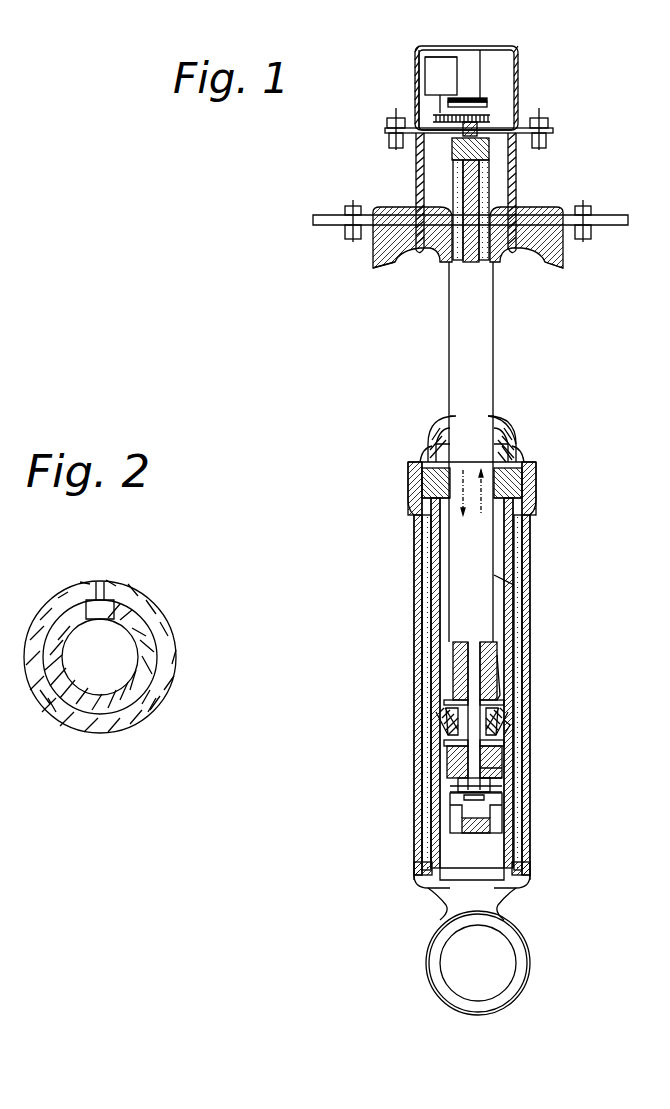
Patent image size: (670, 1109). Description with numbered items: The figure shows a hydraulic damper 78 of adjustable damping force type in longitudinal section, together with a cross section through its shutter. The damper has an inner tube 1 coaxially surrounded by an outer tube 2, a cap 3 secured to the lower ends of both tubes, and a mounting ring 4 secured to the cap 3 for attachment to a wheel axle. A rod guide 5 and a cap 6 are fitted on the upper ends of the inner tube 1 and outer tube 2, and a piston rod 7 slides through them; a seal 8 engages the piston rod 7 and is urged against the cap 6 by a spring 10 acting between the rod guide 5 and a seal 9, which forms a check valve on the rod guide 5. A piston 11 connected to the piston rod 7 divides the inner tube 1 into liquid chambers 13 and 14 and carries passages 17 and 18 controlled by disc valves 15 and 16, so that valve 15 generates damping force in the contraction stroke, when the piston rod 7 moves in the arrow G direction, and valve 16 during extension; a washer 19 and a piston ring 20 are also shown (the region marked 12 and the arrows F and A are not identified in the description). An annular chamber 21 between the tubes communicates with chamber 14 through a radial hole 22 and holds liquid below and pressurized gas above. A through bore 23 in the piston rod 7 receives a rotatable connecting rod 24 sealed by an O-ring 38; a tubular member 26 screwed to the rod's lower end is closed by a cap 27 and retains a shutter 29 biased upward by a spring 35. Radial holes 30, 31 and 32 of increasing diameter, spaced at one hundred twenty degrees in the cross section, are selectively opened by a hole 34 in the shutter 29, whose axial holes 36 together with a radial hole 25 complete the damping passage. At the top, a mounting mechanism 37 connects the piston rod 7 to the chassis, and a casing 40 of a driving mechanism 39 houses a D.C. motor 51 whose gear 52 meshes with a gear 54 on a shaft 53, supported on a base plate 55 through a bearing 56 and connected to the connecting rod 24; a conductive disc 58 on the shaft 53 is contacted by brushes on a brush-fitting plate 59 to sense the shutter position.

In FIG. 1, the inner tube 1 is at (418, 542).
In FIG. 1, the outer tube 2 is at (425, 566).
In FIG. 1, the cap 3 is at (428, 888).
In FIG. 1, the mounting ring 4 is at (440, 938).
In FIG. 1, the rod guide 5 is at (508, 456).
In FIG. 1, the cap 6 is at (498, 416).
In FIG. 1, the piston rod 7 is at (494, 324).
In FIG. 1, the seal 8 is at (428, 428).
In FIG. 1, the seal 9 is at (432, 438).
In FIG. 1, the spring 10 is at (426, 458).
In FIG. 1, the piston 11 is at (446, 700).
In FIG. 1, the annular fluid chamber 12 is at (442, 592).
In FIG. 1, the liquid chamber 13 is at (512, 586).
In FIG. 1, the liquid chamber 14 is at (512, 900).
In FIG. 1, the disc valve 15 is at (498, 680).
In FIG. 1, the disc valve 16 is at (446, 740).
In FIG. 1, the passage 17 is at (500, 738).
In FIG. 1, the passage 18 is at (450, 712).
In FIG. 1, the washer 19 is at (467, 668).
In FIG. 1, the piston ring 20 is at (500, 708).
In FIG. 1, the annular chamber 21 is at (528, 544).
In FIG. 1, the radial hole 22 is at (506, 875).
In FIG. 1, the through bore 23 is at (458, 660).
In FIG. 1, the connecting rod 24 is at (482, 640).
In FIG. 1, the radial hole 25 is at (498, 660).
In FIG. 1, the tubular member 26 is at (452, 760).
In FIG. 2, the tubular member 26 is at (92, 733).
In FIG. 1, the cap 27 is at (474, 834).
In FIG. 1, the shutter 29 is at (490, 788).
In FIG. 2, the shutter 29 is at (148, 630).
In FIG. 2, the radial hole 30 is at (108, 600).
In FIG. 1, the radial hole 31 is at (488, 798).
In FIG. 2, the radial hole 31 is at (148, 708).
In FIG. 2, the radial hole 32 is at (56, 708).
In FIG. 2, the hole 34 is at (92, 600).
In FIG. 1, the spring 35 is at (460, 800).
In FIG. 1, the axial holes 36 is at (500, 770).
In FIG. 1, the mounting mechanism 37 is at (428, 265).
In FIG. 1, the O-ring 38 is at (462, 182).
In FIG. 1, the driving mechanism 39 is at (428, 80).
In FIG. 1, the casing 40 is at (417, 75).
In FIG. 1, the D.C. motor 51 is at (428, 62).
In FIG. 1, the gear 52 is at (432, 112).
In FIG. 1, the shaft 53 is at (484, 150).
In FIG. 1, the gear 54 is at (490, 118).
In FIG. 1, the base plate 55 is at (418, 166).
In FIG. 1, the bearing 56 is at (478, 130).
In FIG. 1, the conductive disc 58 is at (516, 110).
In FIG. 1, the brush-fitting plate 59 is at (480, 98).
In FIG. 1, the hydraulic damper 78 is at (568, 436).
In FIG. 1, the arrow G direction G is at (450, 505).
In FIG. 1, the fluid chamber F is at (494, 505).
In FIG. 2, the section direction A is at (188, 680).